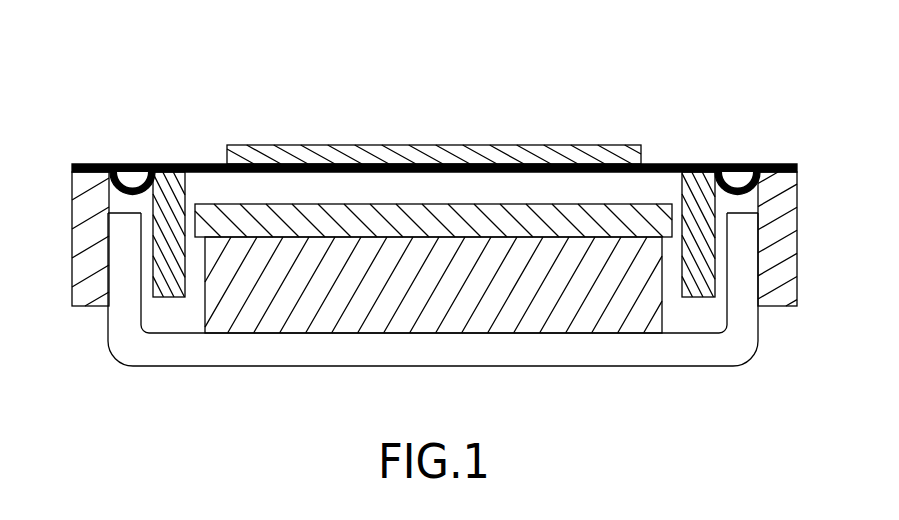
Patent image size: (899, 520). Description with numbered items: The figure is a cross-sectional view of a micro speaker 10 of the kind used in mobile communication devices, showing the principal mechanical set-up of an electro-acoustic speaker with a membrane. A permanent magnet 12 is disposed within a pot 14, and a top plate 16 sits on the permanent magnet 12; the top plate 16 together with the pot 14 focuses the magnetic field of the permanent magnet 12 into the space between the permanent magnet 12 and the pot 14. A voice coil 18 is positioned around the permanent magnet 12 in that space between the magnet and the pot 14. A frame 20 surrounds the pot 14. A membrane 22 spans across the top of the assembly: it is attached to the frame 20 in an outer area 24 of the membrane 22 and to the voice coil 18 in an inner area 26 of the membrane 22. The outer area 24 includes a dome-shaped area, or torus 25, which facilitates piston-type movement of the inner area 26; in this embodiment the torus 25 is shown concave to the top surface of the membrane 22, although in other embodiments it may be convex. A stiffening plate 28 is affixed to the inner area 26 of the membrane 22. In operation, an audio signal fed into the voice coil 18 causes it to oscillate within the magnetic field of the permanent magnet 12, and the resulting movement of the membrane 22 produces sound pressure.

The micro speaker 10 is at (92, 58).
The permanent magnet 12 is at (282, 317).
The pot 14 is at (738, 343).
The top plate 16 is at (227, 220).
The voice coil 18 is at (695, 292).
The frame 20 is at (788, 227).
The membrane 22 is at (208, 164).
The outer area 24 is at (759, 135).
The torus 25 is at (743, 183).
The inner area 26 is at (539, 101).
The stiffening plate 28 is at (330, 145).